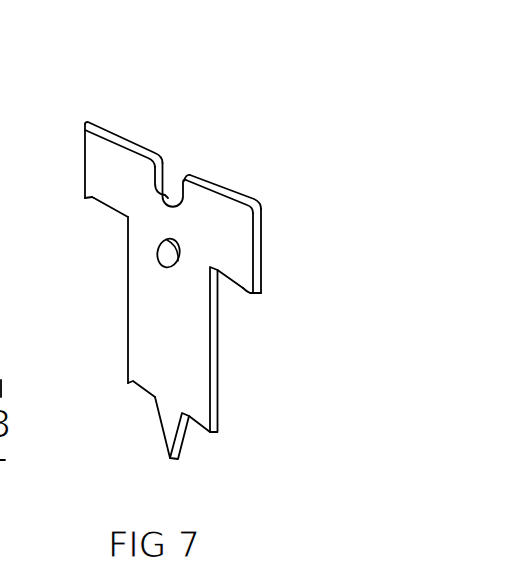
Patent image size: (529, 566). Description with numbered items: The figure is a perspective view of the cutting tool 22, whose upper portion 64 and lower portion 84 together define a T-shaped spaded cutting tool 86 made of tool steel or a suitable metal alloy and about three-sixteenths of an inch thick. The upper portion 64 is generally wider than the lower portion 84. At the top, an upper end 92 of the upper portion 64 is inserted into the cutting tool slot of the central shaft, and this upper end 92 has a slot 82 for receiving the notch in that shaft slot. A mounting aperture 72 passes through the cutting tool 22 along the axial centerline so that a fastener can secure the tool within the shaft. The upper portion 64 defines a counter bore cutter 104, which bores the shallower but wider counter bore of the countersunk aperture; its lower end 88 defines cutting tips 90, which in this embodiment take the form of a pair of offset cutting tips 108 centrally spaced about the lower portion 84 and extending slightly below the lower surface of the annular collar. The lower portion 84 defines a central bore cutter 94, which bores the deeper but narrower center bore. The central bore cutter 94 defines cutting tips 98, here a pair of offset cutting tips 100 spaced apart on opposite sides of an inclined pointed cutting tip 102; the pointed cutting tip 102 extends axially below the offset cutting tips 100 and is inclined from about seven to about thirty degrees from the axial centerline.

The T-shaped spaded cutting tool 86 is at (263, 62).
The cutting tool 22 is at (217, 240).
The upper portion 64 is at (82, 150).
The counter bore cutter 104 is at (125, 167).
The slot 82 is at (161, 183).
The upper end 92 is at (235, 197).
The cutting tips 90 is at (82, 200).
The offset cutting tips 108 is at (90, 205).
The lower end 88 is at (110, 213).
The mounting aperture 72 is at (166, 259).
The central bore cutter 94 is at (145, 347).
The lower portion 84 is at (222, 360).
The cutting tips 98 is at (127, 385).
The offset cutting tips 100 is at (132, 391).
The inclined pointed cutting tip 102 is at (183, 435).